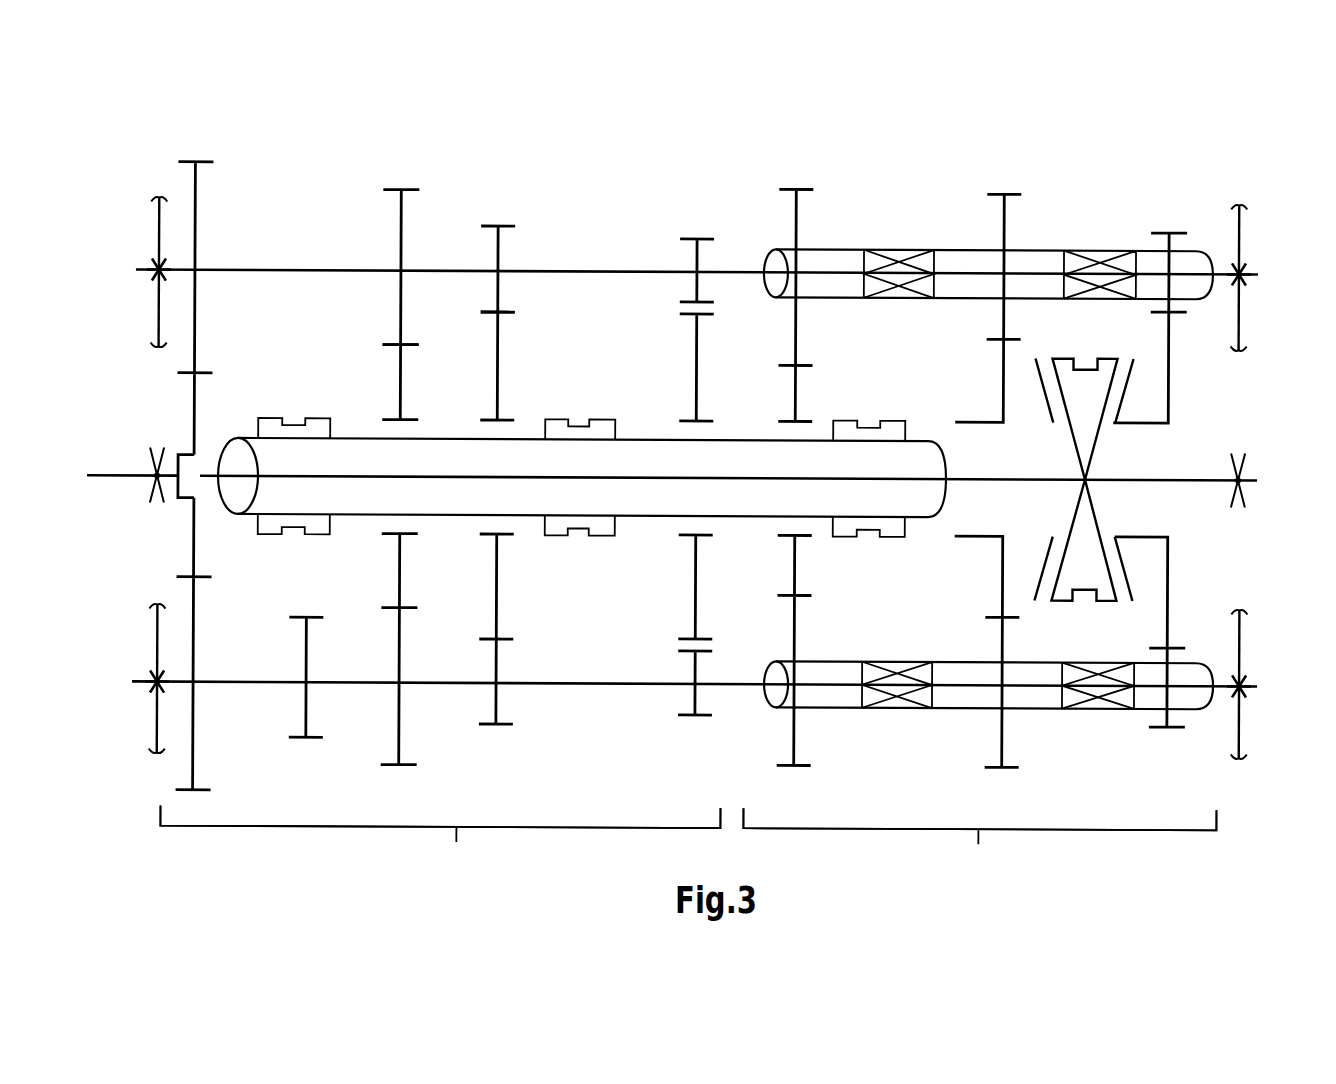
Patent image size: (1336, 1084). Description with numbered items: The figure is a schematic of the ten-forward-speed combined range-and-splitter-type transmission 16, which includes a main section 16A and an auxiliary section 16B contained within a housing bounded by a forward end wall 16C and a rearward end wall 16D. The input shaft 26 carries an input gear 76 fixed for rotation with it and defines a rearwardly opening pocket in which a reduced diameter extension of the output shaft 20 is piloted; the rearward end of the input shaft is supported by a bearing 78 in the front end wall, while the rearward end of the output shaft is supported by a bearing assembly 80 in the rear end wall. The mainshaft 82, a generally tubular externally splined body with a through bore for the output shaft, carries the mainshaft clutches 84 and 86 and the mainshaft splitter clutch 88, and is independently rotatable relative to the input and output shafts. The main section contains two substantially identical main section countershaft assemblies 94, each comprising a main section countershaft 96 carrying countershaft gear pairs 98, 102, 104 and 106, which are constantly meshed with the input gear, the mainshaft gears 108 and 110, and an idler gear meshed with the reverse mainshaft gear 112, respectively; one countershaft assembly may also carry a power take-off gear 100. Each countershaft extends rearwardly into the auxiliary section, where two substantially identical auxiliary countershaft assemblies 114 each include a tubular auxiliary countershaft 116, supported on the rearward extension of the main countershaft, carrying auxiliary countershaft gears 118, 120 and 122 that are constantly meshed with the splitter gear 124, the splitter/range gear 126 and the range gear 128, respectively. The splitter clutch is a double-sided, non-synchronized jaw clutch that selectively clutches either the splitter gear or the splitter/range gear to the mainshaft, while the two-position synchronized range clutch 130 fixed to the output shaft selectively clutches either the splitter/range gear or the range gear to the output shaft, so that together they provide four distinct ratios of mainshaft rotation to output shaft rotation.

The compound mechanical transmission 16 is at (925, 160).
The main section 16A is at (440, 841).
The auxiliary section 16B is at (979, 842).
The forward end wall 16C is at (157, 320).
The rearward end wall 16D is at (1245, 233).
The output shaft 20 is at (1196, 476).
The input shaft 26 is at (115, 480).
The input gear 76 is at (193, 417).
The bearing 78 is at (162, 495).
The bearing assembly 80 is at (1241, 508).
The mainshaft 82 is at (448, 432).
The mainshaft clutch 84 is at (293, 424).
The mainshaft clutch 86 is at (579, 426).
The mainshaft splitter clutch 88 is at (871, 421).
The main section countershaft assembly 94 is at (592, 230).
The main section countershaft 96 is at (448, 686).
The countershaft gear 98 is at (196, 235).
The power take-off gear 100 is at (308, 647).
The countershaft gear 102 is at (400, 248).
The countershaft gear 104 is at (497, 248).
The countershaft gear 106 is at (696, 256).
The mainshaft gear 108 is at (400, 375).
The mainshaft gear 110 is at (500, 370).
The reverse mainshaft gear 112 is at (697, 375).
The auxiliary countershaft assembly 114 is at (1110, 190).
The auxiliary countershaft 116 is at (958, 249).
The auxiliary countershaft gear 118 is at (797, 217).
The auxiliary countershaft gear 120 is at (1003, 225).
The auxiliary countershaft gear 122 is at (1170, 242).
The splitter gear 124 is at (797, 392).
The splitter/range gear 126 is at (150, 688).
The range gear 128 is at (1168, 337).
The synchronized range clutch 130 is at (1088, 530).